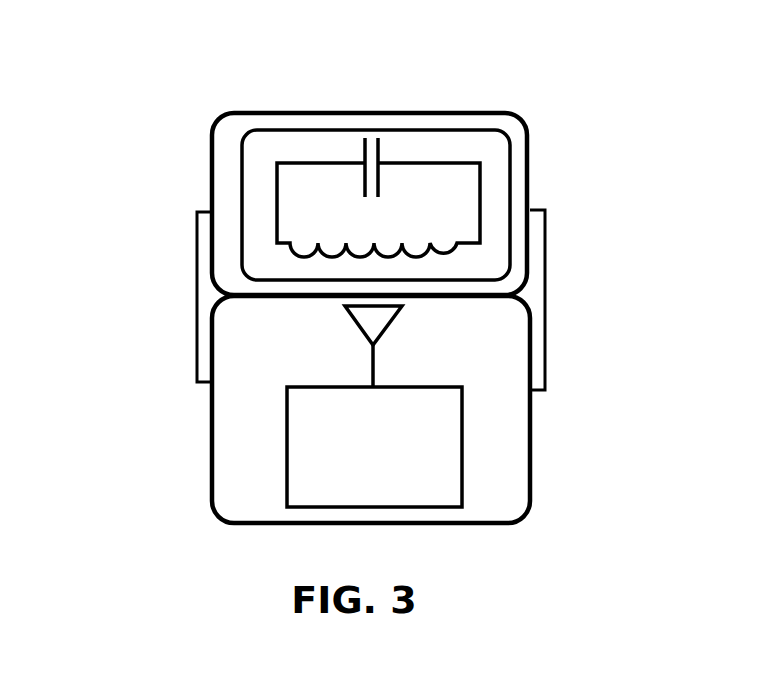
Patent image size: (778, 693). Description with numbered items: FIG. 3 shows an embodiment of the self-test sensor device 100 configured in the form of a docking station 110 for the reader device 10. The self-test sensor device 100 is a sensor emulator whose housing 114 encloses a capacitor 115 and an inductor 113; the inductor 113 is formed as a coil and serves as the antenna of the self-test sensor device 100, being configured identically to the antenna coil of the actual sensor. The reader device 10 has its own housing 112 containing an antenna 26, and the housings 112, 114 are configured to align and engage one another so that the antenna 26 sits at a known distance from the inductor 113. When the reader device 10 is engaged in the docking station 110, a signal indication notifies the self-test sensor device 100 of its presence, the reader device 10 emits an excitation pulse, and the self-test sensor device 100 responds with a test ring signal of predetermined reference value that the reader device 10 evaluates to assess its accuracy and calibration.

The self-test sensor device 100 is at (216, 98).
The housing 114 is at (213, 162).
The inductor 113 is at (414, 233).
The capacitor 115 is at (388, 137).
The docking station 110 is at (197, 293).
The housing 112 is at (210, 443).
The antenna 26 is at (358, 330).
The reader device 10 is at (480, 420).